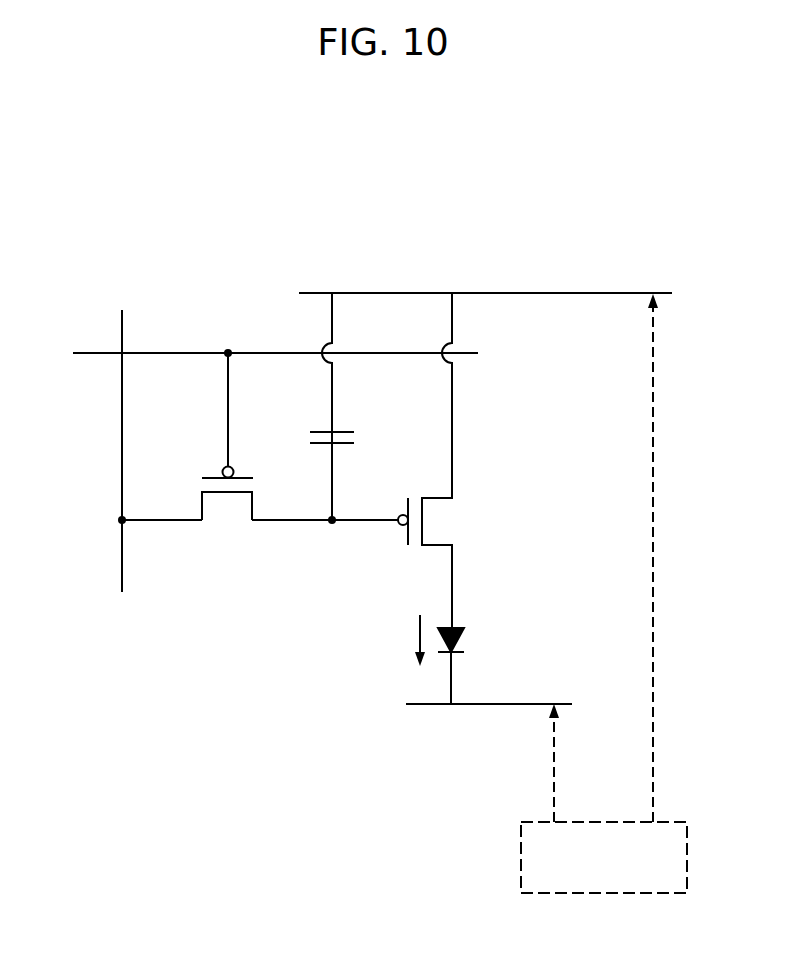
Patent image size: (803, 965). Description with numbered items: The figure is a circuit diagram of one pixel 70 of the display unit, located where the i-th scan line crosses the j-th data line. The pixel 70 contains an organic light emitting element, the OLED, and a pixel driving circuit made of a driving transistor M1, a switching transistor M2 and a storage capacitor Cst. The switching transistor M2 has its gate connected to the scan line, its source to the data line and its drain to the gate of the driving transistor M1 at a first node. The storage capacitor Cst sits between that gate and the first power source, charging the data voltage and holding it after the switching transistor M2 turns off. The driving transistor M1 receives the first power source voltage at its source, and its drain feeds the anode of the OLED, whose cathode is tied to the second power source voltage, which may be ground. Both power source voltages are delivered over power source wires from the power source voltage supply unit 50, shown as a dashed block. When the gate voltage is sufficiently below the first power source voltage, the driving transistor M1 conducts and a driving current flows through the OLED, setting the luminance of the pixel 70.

The pixel 70 is at (563, 208).
The power source voltage supply unit 50 is at (604, 593).
The driving transistor M1 is at (443, 460).
The switching transistor M2 is at (258, 452).
The storage capacitor Cst is at (352, 408).
The organic light emitting element OLED is at (483, 665).